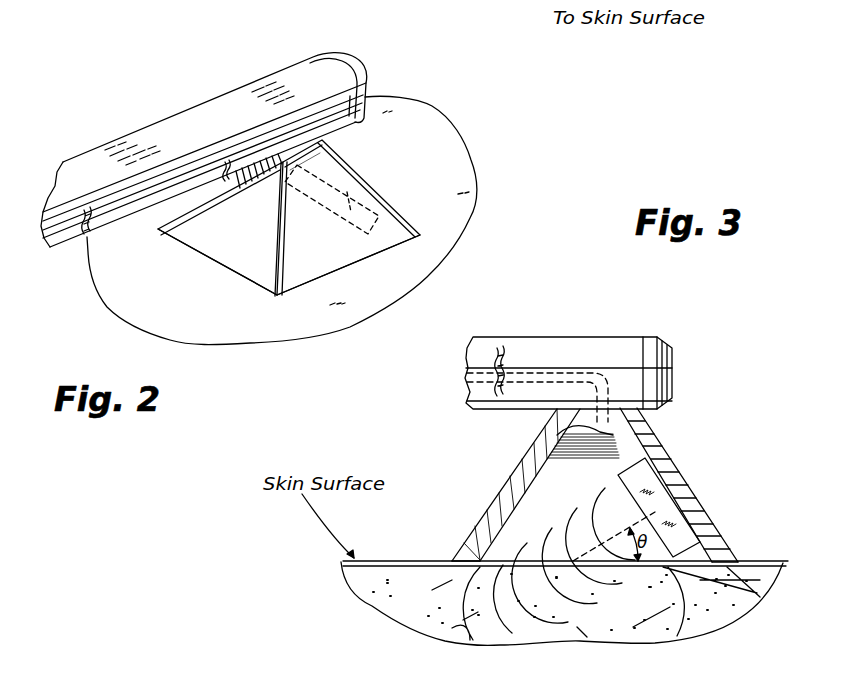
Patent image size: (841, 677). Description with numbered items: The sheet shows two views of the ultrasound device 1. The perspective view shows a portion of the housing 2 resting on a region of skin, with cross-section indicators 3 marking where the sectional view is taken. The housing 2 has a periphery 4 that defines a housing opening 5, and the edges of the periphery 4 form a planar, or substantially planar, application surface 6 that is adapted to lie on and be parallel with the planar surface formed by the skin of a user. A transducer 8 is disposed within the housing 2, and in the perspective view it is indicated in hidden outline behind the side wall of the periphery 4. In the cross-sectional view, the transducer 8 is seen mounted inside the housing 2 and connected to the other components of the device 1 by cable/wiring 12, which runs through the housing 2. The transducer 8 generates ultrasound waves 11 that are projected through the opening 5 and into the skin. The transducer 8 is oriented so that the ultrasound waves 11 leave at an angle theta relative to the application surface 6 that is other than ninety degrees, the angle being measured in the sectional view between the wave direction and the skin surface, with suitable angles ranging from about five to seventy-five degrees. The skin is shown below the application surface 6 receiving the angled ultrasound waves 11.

In FIG. 2, the device 1 is at (110, 103).
In FIG. 3, the device 1 is at (699, 377).
In FIG. 2, the housing 2 is at (221, 281).
In FIG. 3, the housing 2 is at (500, 474).
In FIG. 2, the cross-section indicators 3 is at (409, 133).
In FIG. 2, the periphery 4 is at (313, 247).
In FIG. 3, the housing opening 5 is at (622, 600).
In FIG. 2, the application surface 6 is at (207, 262).
In FIG. 3, the application surface 6 is at (452, 562).
In FIG. 2, the transducer 8 is at (352, 200).
In FIG. 3, the transducer 8 is at (660, 505).
In FIG. 3, the ultrasound waves 11 is at (545, 522).
In FIG. 3, the cable/wiring 12 is at (553, 376).